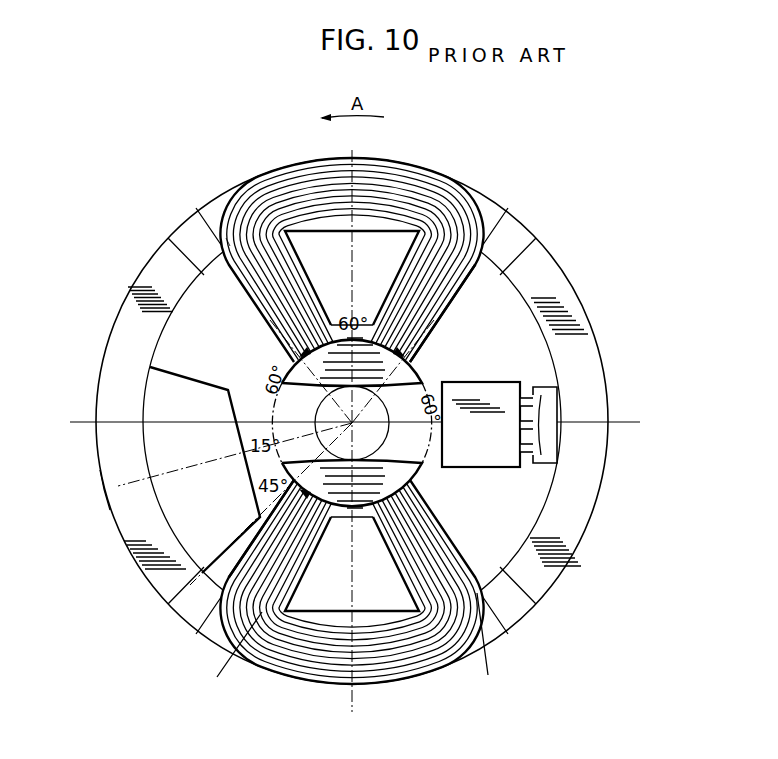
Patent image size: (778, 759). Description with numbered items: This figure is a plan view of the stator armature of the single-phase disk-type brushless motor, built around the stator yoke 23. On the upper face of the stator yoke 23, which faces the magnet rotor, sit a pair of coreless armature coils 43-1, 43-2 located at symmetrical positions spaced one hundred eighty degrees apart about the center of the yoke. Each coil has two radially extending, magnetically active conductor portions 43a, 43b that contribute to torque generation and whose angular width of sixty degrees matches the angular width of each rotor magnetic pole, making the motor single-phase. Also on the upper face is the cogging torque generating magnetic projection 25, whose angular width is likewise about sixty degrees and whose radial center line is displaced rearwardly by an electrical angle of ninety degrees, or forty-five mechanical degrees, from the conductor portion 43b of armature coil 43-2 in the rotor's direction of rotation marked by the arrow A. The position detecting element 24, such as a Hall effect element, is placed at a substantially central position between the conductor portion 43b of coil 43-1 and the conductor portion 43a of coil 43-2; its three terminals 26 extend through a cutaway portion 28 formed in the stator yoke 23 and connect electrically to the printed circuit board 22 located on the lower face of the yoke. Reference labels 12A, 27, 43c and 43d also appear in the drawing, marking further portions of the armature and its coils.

The stator yoke ring 12A is at (135, 333).
The printed circuit board 22 is at (558, 404).
The stator yoke 23 is at (533, 503).
The position detecting element 24 is at (498, 383).
The cogging torque generating magnetic projection 25 is at (167, 448).
The terminals 26 is at (542, 447).
The yoke portion 27 is at (130, 485).
The cutaway portion 28 is at (565, 392).
The armature coil 43-1 is at (346, 245).
The armature coil 43-2 is at (478, 590).
The magnetically active conductor portion 43a is at (150, 229).
The magnetically active conductor portion 43b is at (497, 287).
The coil winding 43c is at (292, 158).
The coil end turn 43d is at (262, 175).